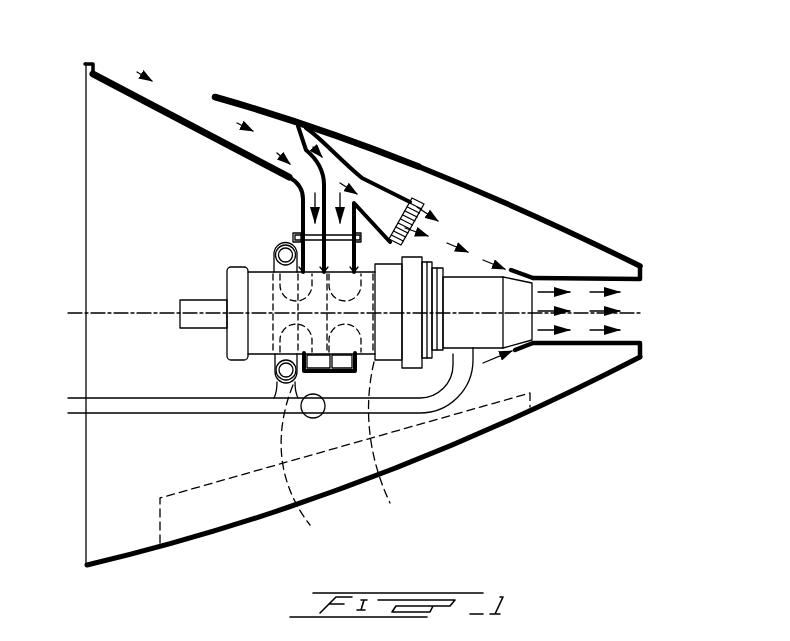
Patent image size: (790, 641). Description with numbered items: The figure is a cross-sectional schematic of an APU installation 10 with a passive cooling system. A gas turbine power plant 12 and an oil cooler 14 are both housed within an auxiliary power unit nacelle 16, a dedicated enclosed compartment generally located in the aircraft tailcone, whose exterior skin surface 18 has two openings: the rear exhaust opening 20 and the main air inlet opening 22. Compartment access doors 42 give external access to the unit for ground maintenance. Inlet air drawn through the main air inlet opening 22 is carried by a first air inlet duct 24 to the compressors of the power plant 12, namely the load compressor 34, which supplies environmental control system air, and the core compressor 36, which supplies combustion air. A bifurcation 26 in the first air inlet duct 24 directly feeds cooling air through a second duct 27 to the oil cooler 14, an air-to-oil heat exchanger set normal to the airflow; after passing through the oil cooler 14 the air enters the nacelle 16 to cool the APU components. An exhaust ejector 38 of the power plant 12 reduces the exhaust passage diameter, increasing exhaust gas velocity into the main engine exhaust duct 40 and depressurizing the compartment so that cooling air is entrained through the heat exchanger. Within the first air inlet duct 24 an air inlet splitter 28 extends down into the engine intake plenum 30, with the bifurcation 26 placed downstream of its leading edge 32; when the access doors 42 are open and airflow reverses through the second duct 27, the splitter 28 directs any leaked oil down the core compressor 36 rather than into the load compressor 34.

The APU installation 10 is at (541, 436).
The gas turbine power plant 12 is at (443, 273).
The oil cooler 14 is at (420, 198).
The auxiliary power unit nacelle 16 is at (608, 355).
The exterior skin surface 18 is at (607, 247).
The rear exhaust opening 20 is at (627, 290).
The main air inlet opening 22 is at (175, 83).
The first air inlet duct 24 is at (258, 105).
The bifurcation 26 is at (396, 152).
The second duct 27 is at (413, 198).
The air inlet splitter 28 is at (360, 175).
The engine intake plenum 30 is at (337, 247).
The leading edge 32 is at (300, 123).
The load compressor 34 is at (270, 446).
The core compressor 36 is at (360, 440).
The exhaust ejector 38 is at (565, 343).
The main engine exhaust duct 40 is at (597, 276).
The compartment access doors 42 is at (439, 434).